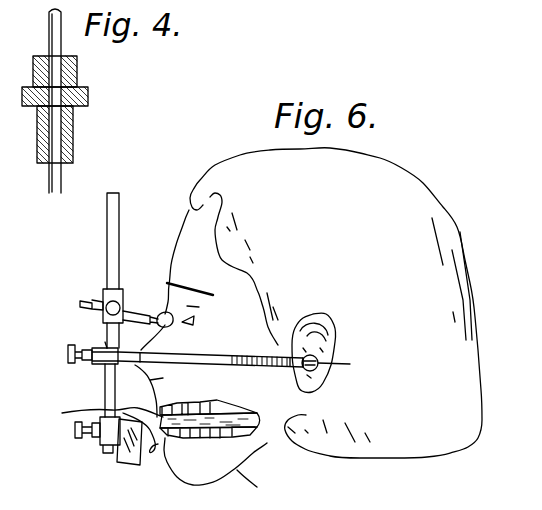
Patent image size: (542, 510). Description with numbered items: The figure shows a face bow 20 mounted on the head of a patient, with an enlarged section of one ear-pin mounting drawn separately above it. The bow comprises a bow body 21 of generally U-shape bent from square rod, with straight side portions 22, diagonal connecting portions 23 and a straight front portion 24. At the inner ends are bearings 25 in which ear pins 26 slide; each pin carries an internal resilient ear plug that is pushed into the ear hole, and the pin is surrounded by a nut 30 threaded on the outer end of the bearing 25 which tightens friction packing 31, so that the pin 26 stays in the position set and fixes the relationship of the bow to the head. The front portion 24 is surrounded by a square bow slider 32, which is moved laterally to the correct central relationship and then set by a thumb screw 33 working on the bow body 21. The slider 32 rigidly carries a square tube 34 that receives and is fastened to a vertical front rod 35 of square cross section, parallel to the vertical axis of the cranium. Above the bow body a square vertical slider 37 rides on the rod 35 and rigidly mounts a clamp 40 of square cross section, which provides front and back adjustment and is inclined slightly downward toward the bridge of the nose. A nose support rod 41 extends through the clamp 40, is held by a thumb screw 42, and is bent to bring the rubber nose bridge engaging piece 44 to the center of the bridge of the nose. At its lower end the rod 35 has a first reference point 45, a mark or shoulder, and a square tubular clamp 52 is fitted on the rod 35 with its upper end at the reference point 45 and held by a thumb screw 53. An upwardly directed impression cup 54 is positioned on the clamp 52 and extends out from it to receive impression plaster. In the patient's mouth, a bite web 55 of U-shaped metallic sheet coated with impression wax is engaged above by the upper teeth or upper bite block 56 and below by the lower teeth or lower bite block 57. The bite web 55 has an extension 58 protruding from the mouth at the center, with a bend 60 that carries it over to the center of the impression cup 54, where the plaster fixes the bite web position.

In FIG. 6, the face bow 20 is at (208, 353).
In FIG. 6, the bow body 21 is at (240, 366).
In FIG. 6, the straight side portions 22 is at (275, 369).
In FIG. 6, the diagonal connecting portions 23 is at (158, 357).
In FIG. 6, the straight front portion 24 is at (90, 348).
In FIG. 4, the bearings 25 is at (78, 91).
In FIG. 6, the bearings 25 is at (300, 354).
In FIG. 4, the ear pins 26 is at (62, 180).
In FIG. 6, the ear pins 26 is at (345, 369).
In FIG. 4, the nuts 30 is at (73, 134).
In FIG. 4, the friction packing 31 is at (77, 67).
In FIG. 6, the bow slider 32 is at (100, 358).
In FIG. 6, the thumb screw 33 is at (68, 355).
In FIG. 6, the square tube 34 is at (110, 372).
In FIG. 6, the vertical front rod 35 is at (119, 241).
In FIG. 6, the vertical slider 37 is at (123, 295).
In FIG. 6, the clamp 40 is at (102, 302).
In FIG. 6, the nose support rod 41 is at (82, 302).
In FIG. 6, the thumb screw 42 is at (120, 317).
In FIG. 6, the nose bridge engaging piece 44 is at (178, 301).
In FIG. 6, the first reference point 45 is at (97, 414).
In FIG. 6, the square tubular clamp 52 is at (107, 437).
In FIG. 6, the thumb screw 53 is at (80, 430).
In FIG. 6, the impression cup 54 is at (132, 460).
In FIG. 6, the bite web 55 is at (203, 428).
In FIG. 6, the upper teeth or upper bite block 56 is at (185, 407).
In FIG. 6, the lower teeth or lower bite block 57 is at (228, 432).
In FIG. 6, the extension 58 is at (140, 424).
In FIG. 6, the bend 60 is at (142, 391).